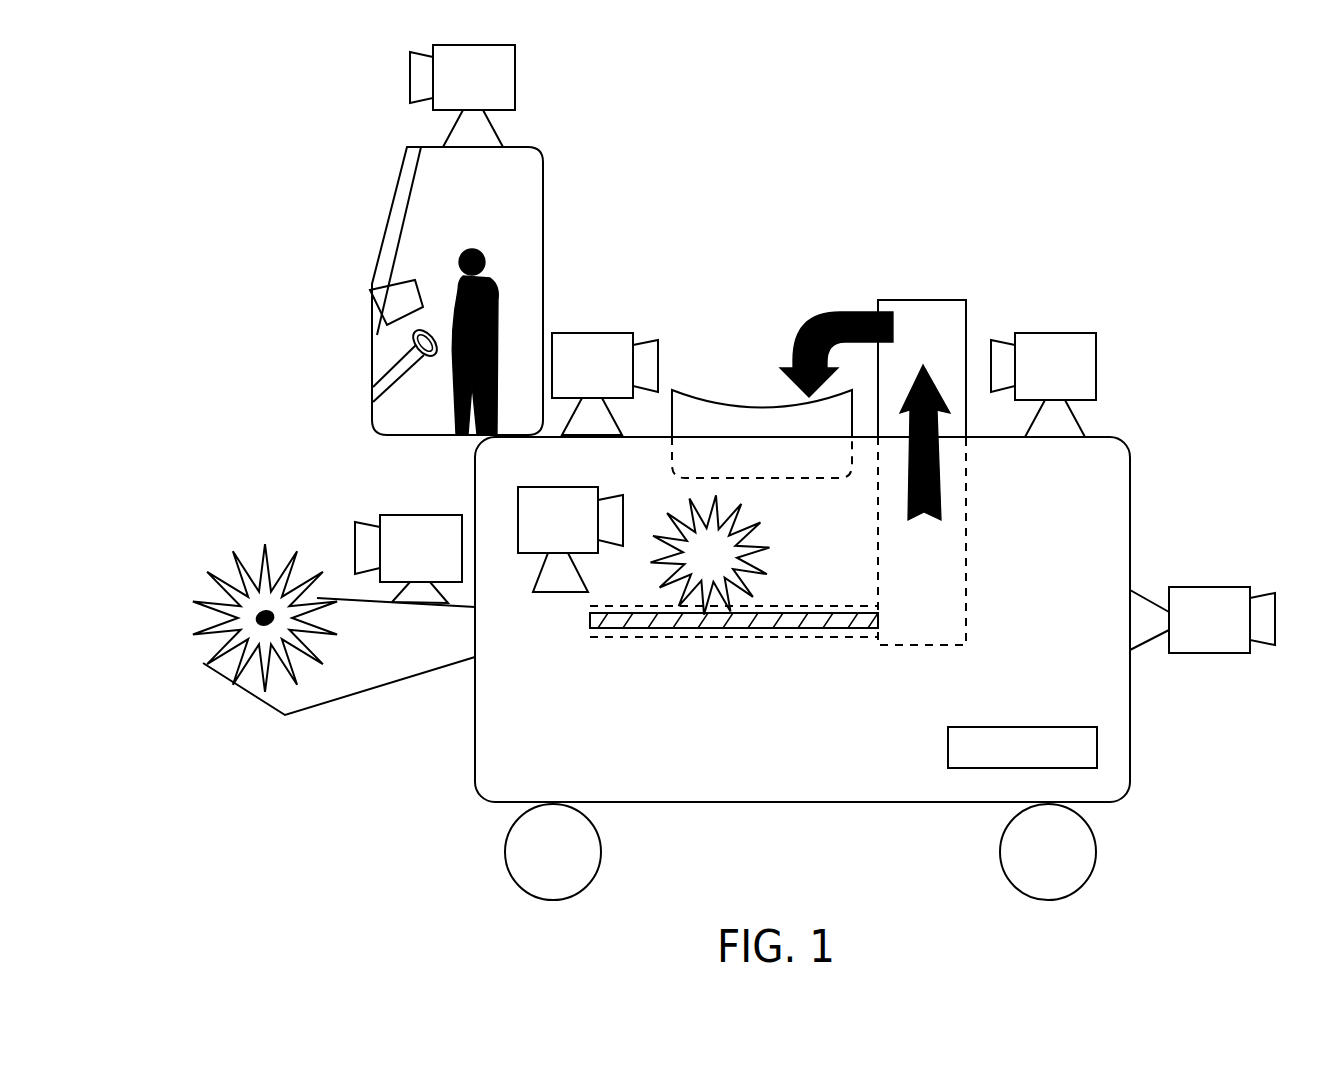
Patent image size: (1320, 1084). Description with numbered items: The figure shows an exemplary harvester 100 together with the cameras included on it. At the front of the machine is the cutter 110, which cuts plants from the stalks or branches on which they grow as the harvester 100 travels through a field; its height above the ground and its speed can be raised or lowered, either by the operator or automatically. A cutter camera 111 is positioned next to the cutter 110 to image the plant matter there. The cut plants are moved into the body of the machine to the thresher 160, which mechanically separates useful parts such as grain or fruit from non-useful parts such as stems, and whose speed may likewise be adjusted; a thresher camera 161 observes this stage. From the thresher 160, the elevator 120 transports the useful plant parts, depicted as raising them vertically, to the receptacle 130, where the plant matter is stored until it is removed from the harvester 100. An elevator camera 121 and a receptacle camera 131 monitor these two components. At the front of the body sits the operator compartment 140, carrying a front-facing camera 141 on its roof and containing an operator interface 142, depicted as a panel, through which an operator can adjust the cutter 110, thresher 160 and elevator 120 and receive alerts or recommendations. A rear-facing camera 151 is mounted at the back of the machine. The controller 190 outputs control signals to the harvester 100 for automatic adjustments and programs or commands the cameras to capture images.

The harvester 100 is at (1022, 97).
The cutter 110 is at (252, 677).
The cutter camera 111 is at (433, 513).
The elevator 120 is at (966, 302).
The elevator camera 121 is at (1096, 365).
The receptacle 130 is at (762, 405).
The receptacle camera 131 is at (598, 333).
The operator compartment 140 is at (543, 192).
The front-facing camera 141 is at (515, 80).
The operator interface 142 is at (403, 300).
The rear-facing camera 151 is at (1208, 587).
The thresher 160 is at (710, 565).
The thresher camera 161 is at (558, 487).
The controller 190 is at (1097, 748).